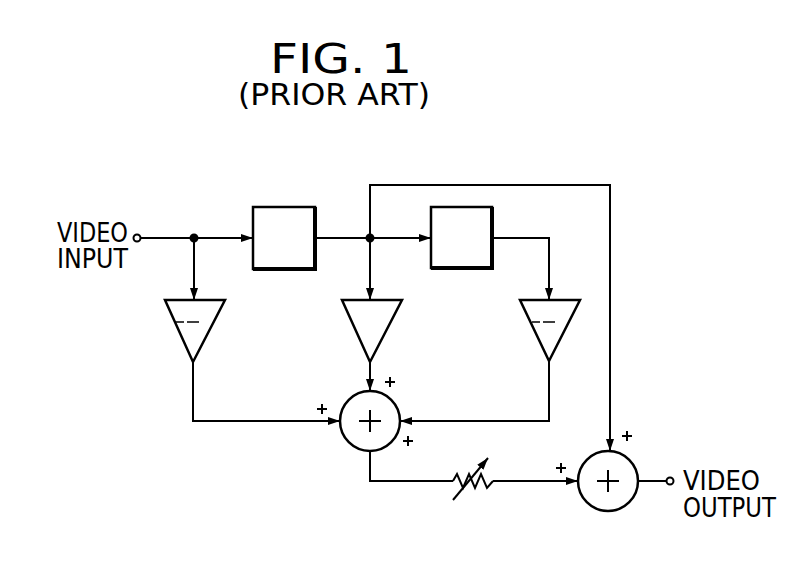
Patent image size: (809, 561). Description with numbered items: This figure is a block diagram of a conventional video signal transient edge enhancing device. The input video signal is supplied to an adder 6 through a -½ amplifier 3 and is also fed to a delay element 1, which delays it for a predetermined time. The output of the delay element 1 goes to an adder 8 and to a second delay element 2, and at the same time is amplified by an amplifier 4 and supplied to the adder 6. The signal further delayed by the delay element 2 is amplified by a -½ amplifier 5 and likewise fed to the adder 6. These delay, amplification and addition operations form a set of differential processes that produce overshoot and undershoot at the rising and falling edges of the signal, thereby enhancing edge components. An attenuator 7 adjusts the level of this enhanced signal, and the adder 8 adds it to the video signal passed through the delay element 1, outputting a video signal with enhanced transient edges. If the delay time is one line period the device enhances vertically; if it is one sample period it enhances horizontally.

The delay element 1 is at (292, 212).
The delay element 2 is at (460, 258).
The -1/2 amplifier 3 is at (208, 342).
The amplifier 4 is at (388, 319).
The -1/2 amplifier 5 is at (533, 333).
The adder 6 is at (345, 442).
The attenuator 7 is at (478, 488).
The adder 8 is at (582, 500).